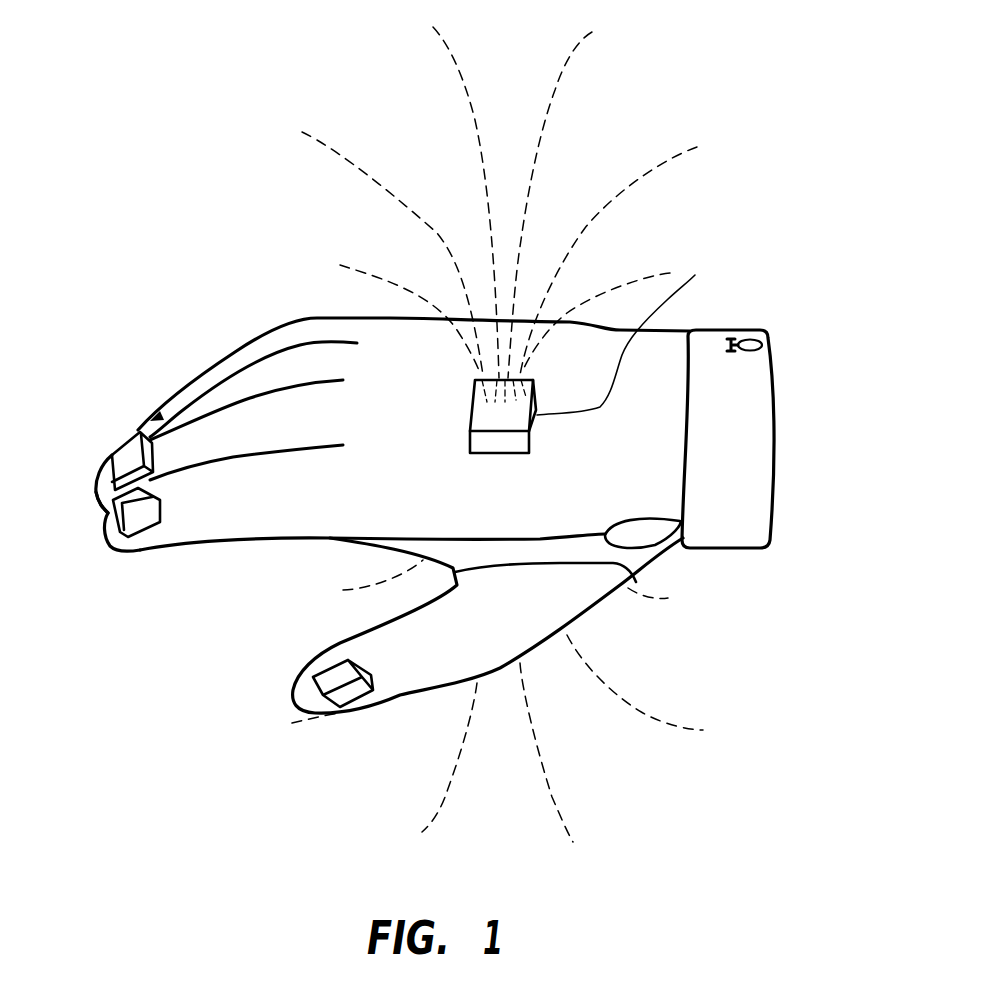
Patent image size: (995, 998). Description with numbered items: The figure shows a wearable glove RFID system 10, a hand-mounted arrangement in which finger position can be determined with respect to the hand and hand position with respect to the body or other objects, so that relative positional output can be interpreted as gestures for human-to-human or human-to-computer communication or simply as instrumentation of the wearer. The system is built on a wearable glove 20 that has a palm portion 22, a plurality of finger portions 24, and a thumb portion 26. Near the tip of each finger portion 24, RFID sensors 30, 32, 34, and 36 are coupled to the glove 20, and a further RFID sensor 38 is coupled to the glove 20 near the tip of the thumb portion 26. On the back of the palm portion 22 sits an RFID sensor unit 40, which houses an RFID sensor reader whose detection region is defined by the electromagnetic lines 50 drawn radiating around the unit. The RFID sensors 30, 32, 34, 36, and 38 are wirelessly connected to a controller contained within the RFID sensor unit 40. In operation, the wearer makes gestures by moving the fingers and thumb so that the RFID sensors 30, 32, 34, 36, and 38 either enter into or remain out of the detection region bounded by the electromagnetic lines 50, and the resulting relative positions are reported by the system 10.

The wearable glove RFID system 10 is at (122, 153).
The wearable glove 20 is at (776, 427).
The palm portion 22 is at (405, 350).
The finger portions 24 is at (272, 370).
The thumb portion 26 is at (421, 690).
The RFID sensor 30 is at (136, 537).
The RFID sensor 32 is at (98, 470).
The RFID sensor 34 is at (133, 448).
The RFID sensor 36 is at (157, 418).
The RFID sensor 38 is at (349, 695).
The RFID sensor unit 40 is at (597, 346).
The electromagnetic lines 50 is at (636, 173).